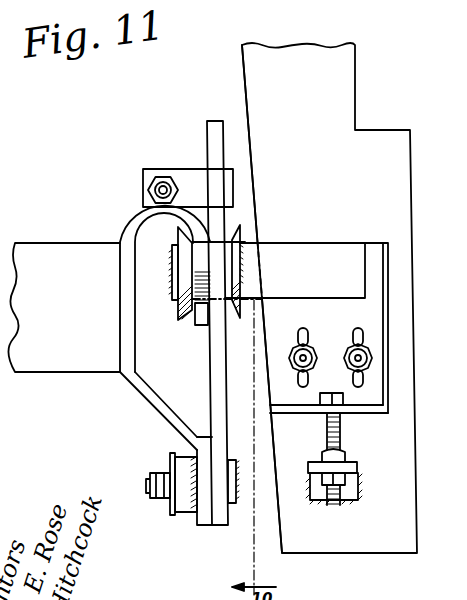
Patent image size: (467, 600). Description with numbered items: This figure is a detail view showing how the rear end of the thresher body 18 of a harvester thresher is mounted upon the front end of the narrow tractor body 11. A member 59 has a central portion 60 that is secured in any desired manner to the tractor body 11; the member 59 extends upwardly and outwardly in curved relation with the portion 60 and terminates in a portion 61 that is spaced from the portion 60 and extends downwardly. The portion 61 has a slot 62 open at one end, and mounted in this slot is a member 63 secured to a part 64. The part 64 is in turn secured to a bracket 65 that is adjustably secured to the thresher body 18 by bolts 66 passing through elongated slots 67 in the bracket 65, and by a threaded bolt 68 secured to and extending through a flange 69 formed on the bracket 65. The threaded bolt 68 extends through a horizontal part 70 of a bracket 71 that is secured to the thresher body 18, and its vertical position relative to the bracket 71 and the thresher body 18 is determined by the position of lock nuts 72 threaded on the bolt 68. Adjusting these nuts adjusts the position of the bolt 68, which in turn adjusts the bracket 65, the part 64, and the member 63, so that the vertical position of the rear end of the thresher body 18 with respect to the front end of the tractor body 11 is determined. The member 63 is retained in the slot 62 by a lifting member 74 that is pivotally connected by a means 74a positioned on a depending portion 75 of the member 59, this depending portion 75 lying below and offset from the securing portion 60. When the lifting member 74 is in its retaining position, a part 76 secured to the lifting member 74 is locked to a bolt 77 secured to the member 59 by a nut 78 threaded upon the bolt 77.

The tractor body 11 is at (63, 358).
The thresher body 18 is at (405, 283).
The member 59 is at (112, 320).
The central portion 60 is at (127, 288).
The portion 61 is at (192, 318).
The slot 62 is at (200, 326).
The member 63 is at (236, 240).
The part 64 is at (303, 250).
The bracket 65 is at (378, 322).
The bolts 66 is at (348, 356).
The elongated slots 67 is at (354, 332).
The threaded bolt 68 is at (345, 400).
The flange 69 is at (378, 412).
The horizontal part 70 is at (352, 466).
The bracket 71 is at (358, 490).
The lock nuts 72 is at (322, 478).
The lifting member 74 is at (218, 378).
The means 74a is at (180, 517).
The depending portion 75 is at (205, 527).
The part 76 is at (191, 170).
The bolt 77 is at (158, 190).
The nut 78 is at (162, 172).